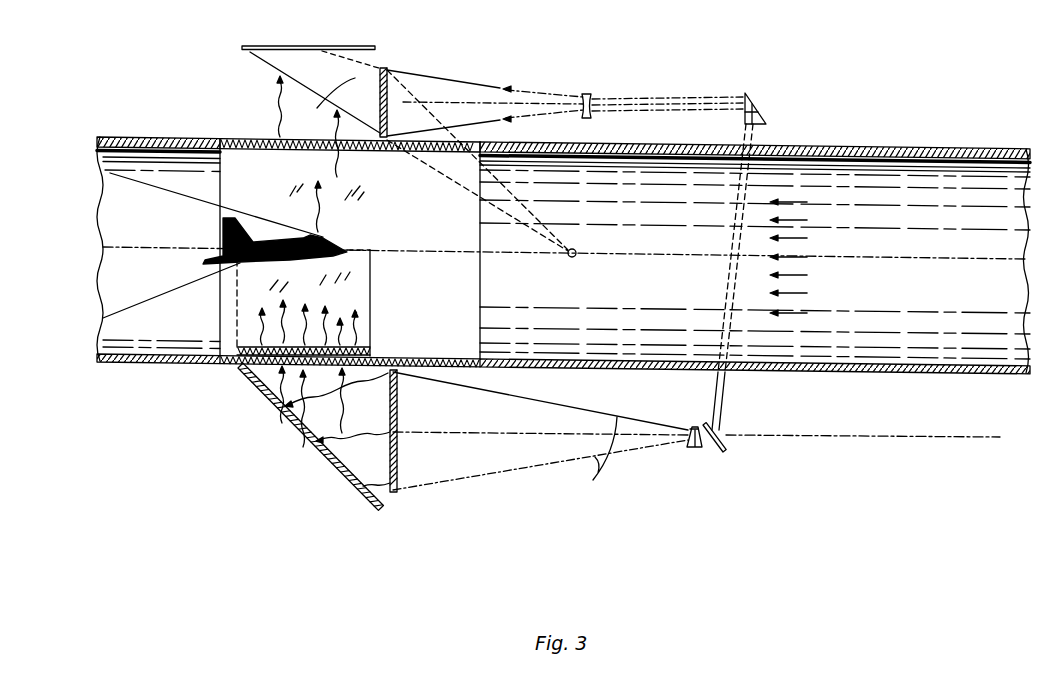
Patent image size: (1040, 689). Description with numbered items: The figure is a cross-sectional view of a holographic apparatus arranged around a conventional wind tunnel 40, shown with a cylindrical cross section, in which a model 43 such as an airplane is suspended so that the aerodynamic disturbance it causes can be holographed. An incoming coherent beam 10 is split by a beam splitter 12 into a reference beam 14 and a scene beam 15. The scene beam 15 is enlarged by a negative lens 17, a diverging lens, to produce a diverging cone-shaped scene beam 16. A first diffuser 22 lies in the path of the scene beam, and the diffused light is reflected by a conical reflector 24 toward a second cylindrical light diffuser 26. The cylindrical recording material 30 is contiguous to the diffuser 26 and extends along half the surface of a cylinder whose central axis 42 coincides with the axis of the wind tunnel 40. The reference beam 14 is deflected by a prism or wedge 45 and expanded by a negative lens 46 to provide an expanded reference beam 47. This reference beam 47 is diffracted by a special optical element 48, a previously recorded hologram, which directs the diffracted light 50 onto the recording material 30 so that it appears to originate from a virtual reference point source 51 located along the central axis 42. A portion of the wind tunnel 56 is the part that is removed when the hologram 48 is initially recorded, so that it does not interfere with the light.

The incoming coherent beam 10 is at (812, 438).
The beam splitter 12 is at (723, 451).
The reference beam 14 is at (722, 407).
The scene beam 15 is at (702, 447).
The diverging cone-shaped scene beam 16 is at (597, 480).
The negative lens 17 is at (694, 428).
The first diffuser 22 is at (396, 490).
The conical reflector 24 is at (370, 505).
The second cylindrical light diffuser 26 is at (372, 328).
The cylindrical recording material 30 is at (303, 40).
The wind tunnel 40 is at (873, 148).
The central axis 42 is at (683, 255).
The model 43 is at (218, 238).
The prism or wedge 45 is at (752, 93).
The negative lens 46 is at (590, 94).
The expanded reference beam 47 is at (538, 112).
The special optical element 48 is at (389, 68).
The diffracted reference beam 50 is at (321, 101).
The virtual reference point source 51 is at (578, 252).
The portion of the wind tunnel 56 is at (247, 140).